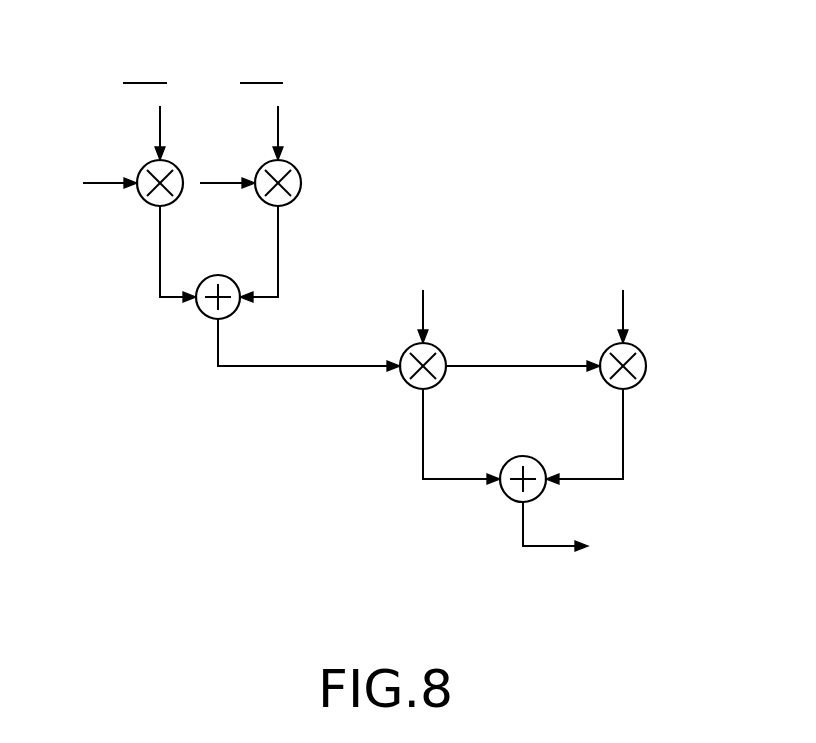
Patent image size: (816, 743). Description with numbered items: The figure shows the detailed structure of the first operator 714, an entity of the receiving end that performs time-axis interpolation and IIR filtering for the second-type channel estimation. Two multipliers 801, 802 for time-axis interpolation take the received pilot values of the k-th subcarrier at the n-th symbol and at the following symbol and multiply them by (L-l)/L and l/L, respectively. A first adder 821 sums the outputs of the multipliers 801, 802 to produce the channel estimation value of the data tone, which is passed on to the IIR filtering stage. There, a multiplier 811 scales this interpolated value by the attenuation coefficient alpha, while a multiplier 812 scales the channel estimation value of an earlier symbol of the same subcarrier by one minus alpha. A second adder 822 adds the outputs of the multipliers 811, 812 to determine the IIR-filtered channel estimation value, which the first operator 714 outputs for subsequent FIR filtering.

The first operator 714 is at (656, 87).
The multiplier for time-axis interpolation 801 is at (176, 168).
The multiplier for time-axis interpolation 802 is at (294, 168).
The first adder 821 is at (231, 279).
The multiplier for IIR filtering 811 is at (441, 349).
The multiplier for IIR filtering 812 is at (641, 349).
The second adder 822 is at (536, 461).